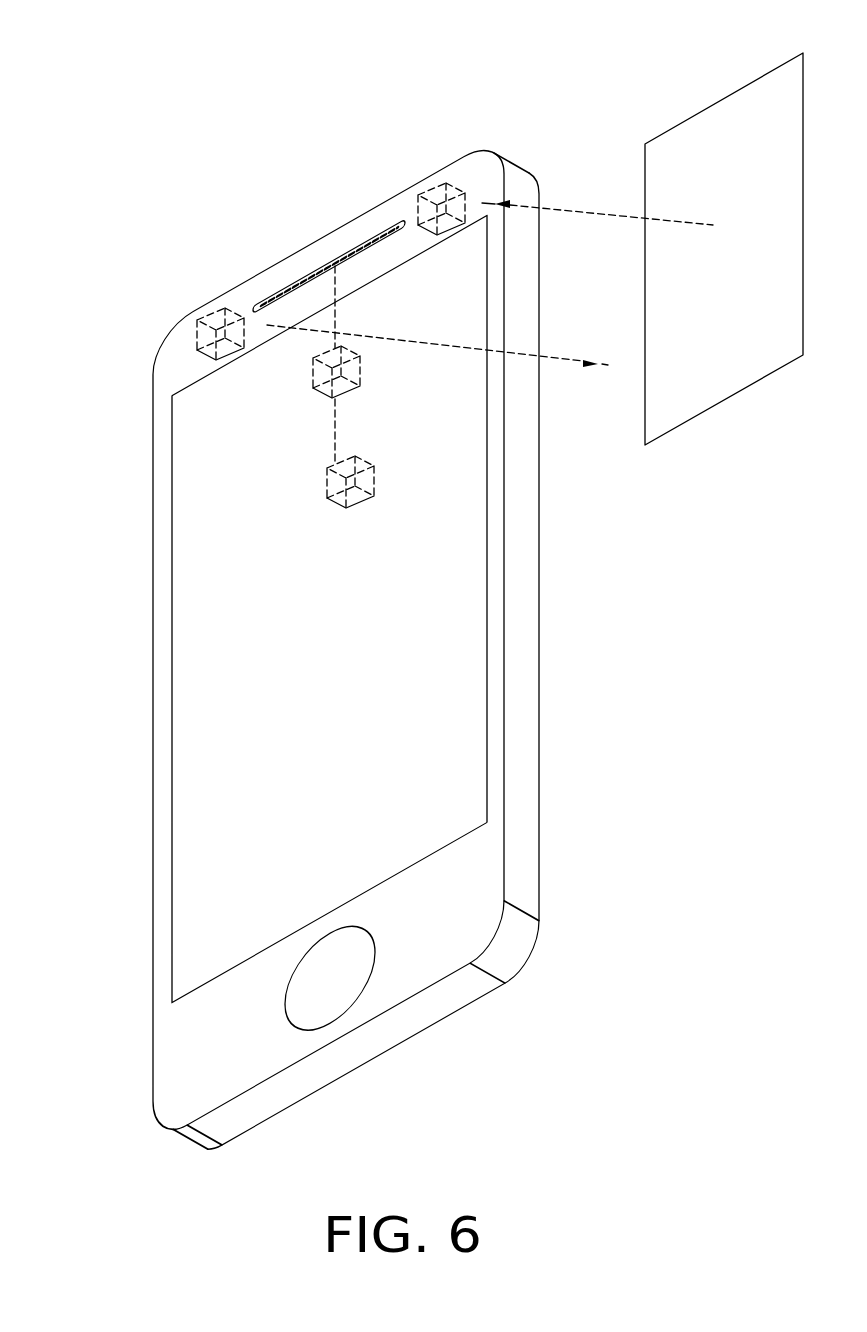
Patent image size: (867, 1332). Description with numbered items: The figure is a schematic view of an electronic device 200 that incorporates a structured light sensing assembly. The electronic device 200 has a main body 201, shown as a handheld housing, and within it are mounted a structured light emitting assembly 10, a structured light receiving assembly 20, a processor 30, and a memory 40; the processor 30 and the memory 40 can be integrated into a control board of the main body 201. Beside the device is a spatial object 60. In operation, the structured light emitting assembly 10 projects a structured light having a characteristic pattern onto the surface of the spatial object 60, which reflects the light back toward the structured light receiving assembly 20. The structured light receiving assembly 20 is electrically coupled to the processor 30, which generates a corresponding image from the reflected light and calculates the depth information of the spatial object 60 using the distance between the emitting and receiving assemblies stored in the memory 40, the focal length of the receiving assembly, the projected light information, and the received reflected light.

The electronic device 200 is at (145, 50).
The main body 201 is at (213, 680).
The structured light emitting assembly 10 is at (212, 315).
The structured light receiving assembly 20 is at (437, 185).
The processor 30 is at (312, 373).
The memory 40 is at (325, 490).
The spatial object 60 is at (703, 118).